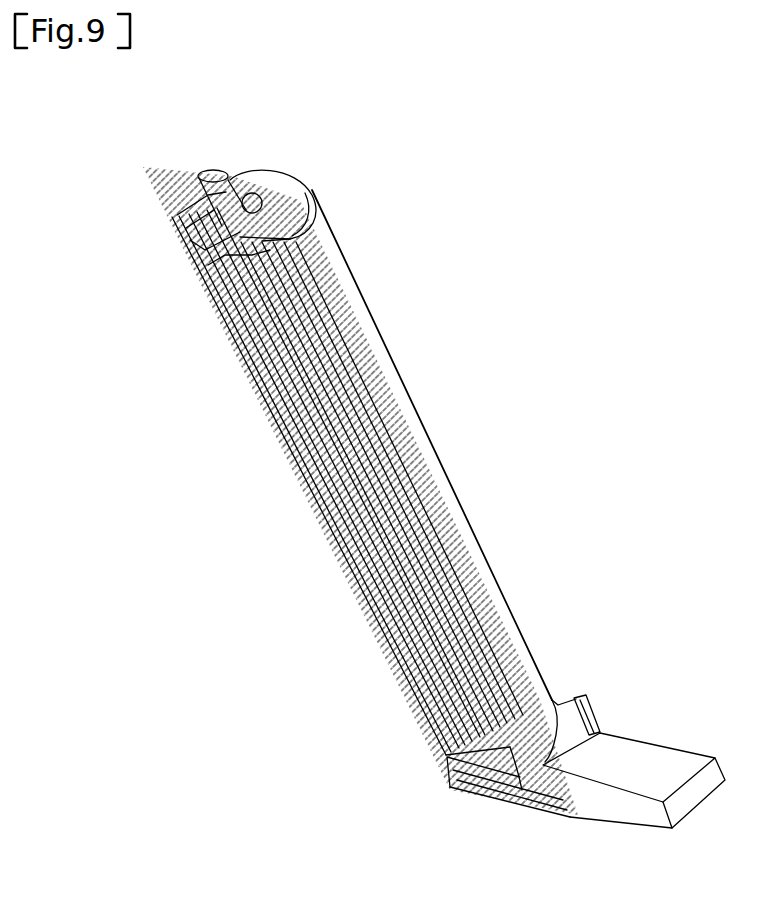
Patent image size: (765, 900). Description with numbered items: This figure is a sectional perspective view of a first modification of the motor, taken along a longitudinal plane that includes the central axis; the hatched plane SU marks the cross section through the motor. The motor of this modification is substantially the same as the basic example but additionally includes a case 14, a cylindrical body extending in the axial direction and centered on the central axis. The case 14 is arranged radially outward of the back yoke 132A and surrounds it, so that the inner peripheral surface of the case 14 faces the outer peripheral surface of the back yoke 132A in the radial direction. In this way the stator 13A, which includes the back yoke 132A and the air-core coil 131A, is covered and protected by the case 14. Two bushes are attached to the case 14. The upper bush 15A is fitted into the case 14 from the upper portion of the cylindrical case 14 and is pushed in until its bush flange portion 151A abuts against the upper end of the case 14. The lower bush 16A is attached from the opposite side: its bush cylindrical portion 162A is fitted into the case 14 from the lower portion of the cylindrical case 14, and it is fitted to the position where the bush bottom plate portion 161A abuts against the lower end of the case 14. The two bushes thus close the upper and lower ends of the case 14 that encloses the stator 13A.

The plane SU is at (178, 205).
The upper bush 15A is at (295, 190).
The bush flange portion 151A is at (292, 243).
The case 14 is at (368, 320).
The stator 13A is at (435, 488).
The back yoke 132A is at (373, 423).
The air-core coil 131A is at (387, 483).
The lower bush 16A is at (582, 697).
The bush cylindrical portion 162A is at (510, 750).
The bush bottom plate portion 161A is at (537, 767).